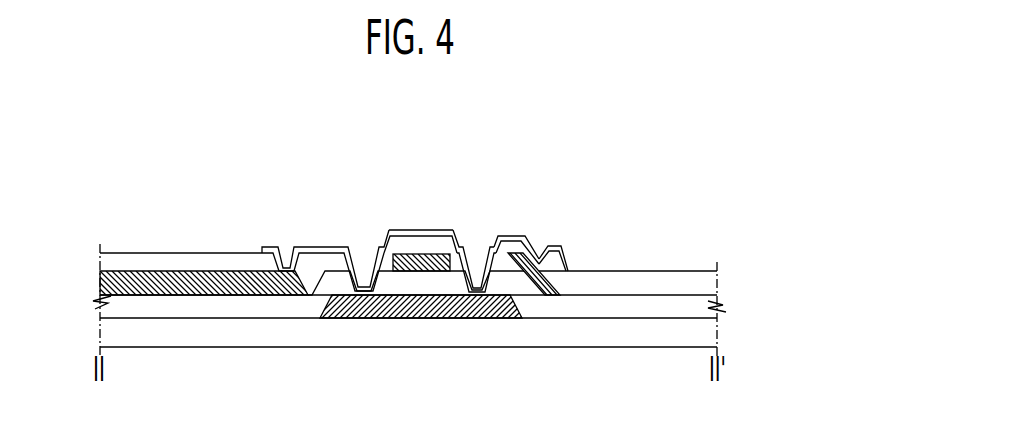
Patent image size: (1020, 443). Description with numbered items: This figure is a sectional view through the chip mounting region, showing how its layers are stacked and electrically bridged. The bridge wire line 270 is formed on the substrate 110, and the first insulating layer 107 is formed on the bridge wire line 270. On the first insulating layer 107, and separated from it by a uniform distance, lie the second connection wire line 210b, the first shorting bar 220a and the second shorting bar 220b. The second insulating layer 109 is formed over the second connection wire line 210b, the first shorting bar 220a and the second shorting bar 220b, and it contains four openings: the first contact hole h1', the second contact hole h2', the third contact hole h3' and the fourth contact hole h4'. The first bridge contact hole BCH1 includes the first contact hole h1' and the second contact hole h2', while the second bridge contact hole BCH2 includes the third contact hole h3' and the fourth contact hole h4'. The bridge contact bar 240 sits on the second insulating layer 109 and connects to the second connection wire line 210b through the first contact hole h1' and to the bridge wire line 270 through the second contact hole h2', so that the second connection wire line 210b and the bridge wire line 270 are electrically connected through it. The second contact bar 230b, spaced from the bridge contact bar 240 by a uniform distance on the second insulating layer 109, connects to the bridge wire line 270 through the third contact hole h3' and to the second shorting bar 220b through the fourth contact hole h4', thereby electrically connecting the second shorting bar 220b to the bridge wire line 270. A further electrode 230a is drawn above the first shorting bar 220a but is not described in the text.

The substrate 110 is at (718, 334).
The first insulating layer 107 is at (718, 300).
The second insulating layer 109 is at (718, 277).
The second connection wire line 210b is at (255, 296).
The first shorting bar 220a is at (420, 272).
The bridge wire line 270 is at (459, 298).
The source electrode 230a is at (413, 230).
The second contact bar 230b is at (510, 236).
The second shorting bar 220b is at (550, 296).
The bridge contact bar 240 is at (326, 246).
The first contact hole h1' is at (276, 196).
The second contact hole h2' is at (353, 206).
The third contact hole h3' is at (490, 206).
The fourth contact hole h4' is at (550, 192).
The first bridge contact hole BCH1 is at (360, 124).
The second bridge contact hole BCH2 is at (582, 124).